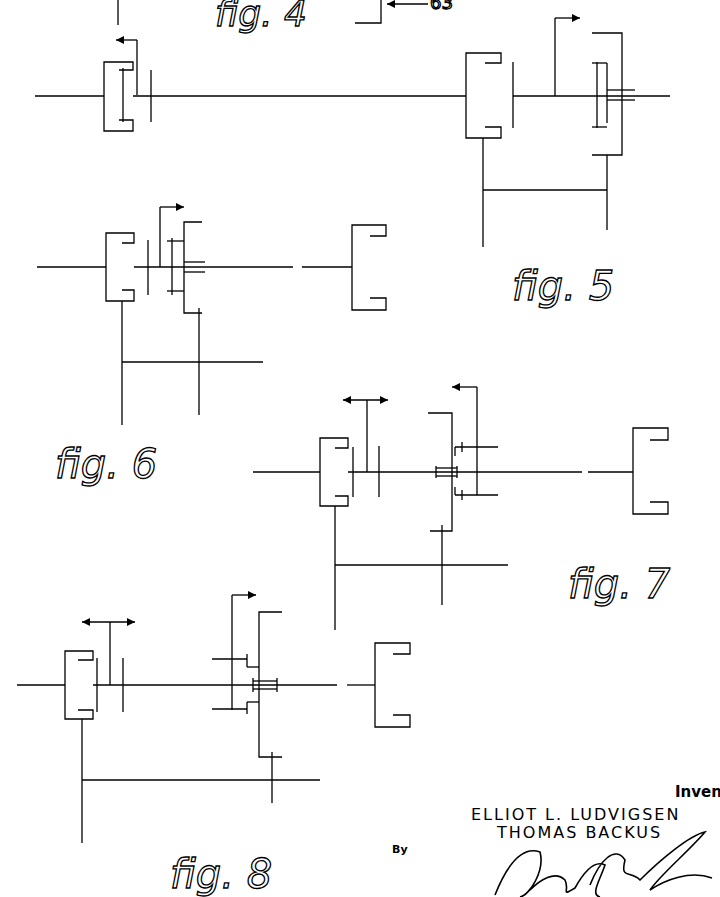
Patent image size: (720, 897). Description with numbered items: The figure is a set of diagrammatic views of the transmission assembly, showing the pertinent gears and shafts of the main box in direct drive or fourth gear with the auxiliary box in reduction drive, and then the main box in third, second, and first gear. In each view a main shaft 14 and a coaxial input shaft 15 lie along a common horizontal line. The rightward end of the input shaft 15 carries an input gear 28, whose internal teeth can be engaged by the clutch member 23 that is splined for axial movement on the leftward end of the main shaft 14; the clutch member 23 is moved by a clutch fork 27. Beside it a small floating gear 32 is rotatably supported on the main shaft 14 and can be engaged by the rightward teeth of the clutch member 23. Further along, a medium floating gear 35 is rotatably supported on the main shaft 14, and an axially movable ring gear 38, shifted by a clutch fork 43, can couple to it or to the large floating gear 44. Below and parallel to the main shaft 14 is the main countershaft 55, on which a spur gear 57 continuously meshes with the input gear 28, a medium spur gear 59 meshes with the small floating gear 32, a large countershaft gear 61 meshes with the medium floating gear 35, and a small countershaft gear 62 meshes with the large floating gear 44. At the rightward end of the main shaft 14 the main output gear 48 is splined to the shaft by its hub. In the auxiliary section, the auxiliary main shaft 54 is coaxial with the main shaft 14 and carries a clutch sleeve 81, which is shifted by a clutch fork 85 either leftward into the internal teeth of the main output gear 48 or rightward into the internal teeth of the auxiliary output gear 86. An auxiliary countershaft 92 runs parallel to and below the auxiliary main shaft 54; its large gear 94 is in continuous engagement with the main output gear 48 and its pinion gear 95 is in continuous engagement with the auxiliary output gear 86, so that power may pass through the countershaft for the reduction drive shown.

In FIG. 5, the main shaft 14 is at (350, 98).
In FIG. 6, the main shaft 14 is at (256, 270).
In FIG. 7, the main shaft 14 is at (555, 474).
In FIG. 8, the main shaft 14 is at (308, 688).
In FIG. 5, the input shaft 15 is at (70, 93).
In FIG. 6, the input shaft 15 is at (58, 269).
In FIG. 7, the input shaft 15 is at (273, 477).
In FIG. 8, the input shaft 15 is at (34, 681).
In FIG. 5, the clutch member 23 is at (157, 116).
In FIG. 6, the clutch member 23 is at (151, 299).
In FIG. 7, the clutch member 23 is at (383, 457).
In FIG. 8, the clutch member 23 is at (130, 705).
In FIG. 5, the clutch fork 27 is at (139, 54).
In FIG. 6, the clutch fork 27 is at (157, 214).
In FIG. 7, the clutch fork 27 is at (362, 418).
In FIG. 8, the clutch fork 27 is at (114, 643).
In FIG. 5, the input gear 28 is at (101, 117).
In FIG. 6, the input gear 28 is at (105, 247).
In FIG. 7, the input gear 28 is at (318, 453).
In FIG. 8, the input gear 28 is at (71, 647).
In FIG. 6, the small floating gear 32 is at (203, 219).
In FIG. 7, the medium floating gear 35 is at (438, 411).
In FIG. 7, the ring gear 38 is at (498, 440).
In FIG. 8, the ring gear 38 is at (229, 713).
In FIG. 7, the clutch fork 43 is at (480, 415).
In FIG. 8, the clutch fork 43 is at (229, 610).
In FIG. 8, the large floating gear 44 is at (263, 642).
In FIG. 5, the main output gear 48 is at (464, 116).
In FIG. 6, the main output gear 48 is at (356, 287).
In FIG. 7, the main output gear 48 is at (643, 426).
In FIG. 8, the main output gear 48 is at (414, 716).
In FIG. 5, the auxiliary main shaft 54 is at (658, 99).
In FIG. 6, the main countershaft 55 is at (238, 365).
In FIG. 7, the main countershaft 55 is at (398, 563).
In FIG. 8, the main countershaft 55 is at (138, 783).
In FIG. 6, the spur gear 57 is at (120, 334).
In FIG. 7, the spur gear 57 is at (332, 538).
In FIG. 8, the spur gear 57 is at (79, 755).
In FIG. 6, the medium spur gear 59 is at (204, 341).
In FIG. 7, the large countershaft gear 61 is at (449, 585).
In FIG. 8, the small countershaft gear 62 is at (275, 791).
In FIG. 5, the clutch sleeve 81 is at (567, 98).
In FIG. 5, the clutch fork 85 is at (552, 32).
In FIG. 5, the auxiliary output gear 86 is at (625, 47).
In FIG. 5, the auxiliary countershaft 92 is at (548, 192).
In FIG. 5, the large gear 94 is at (481, 178).
In FIG. 5, the pinion gear 95 is at (612, 203).